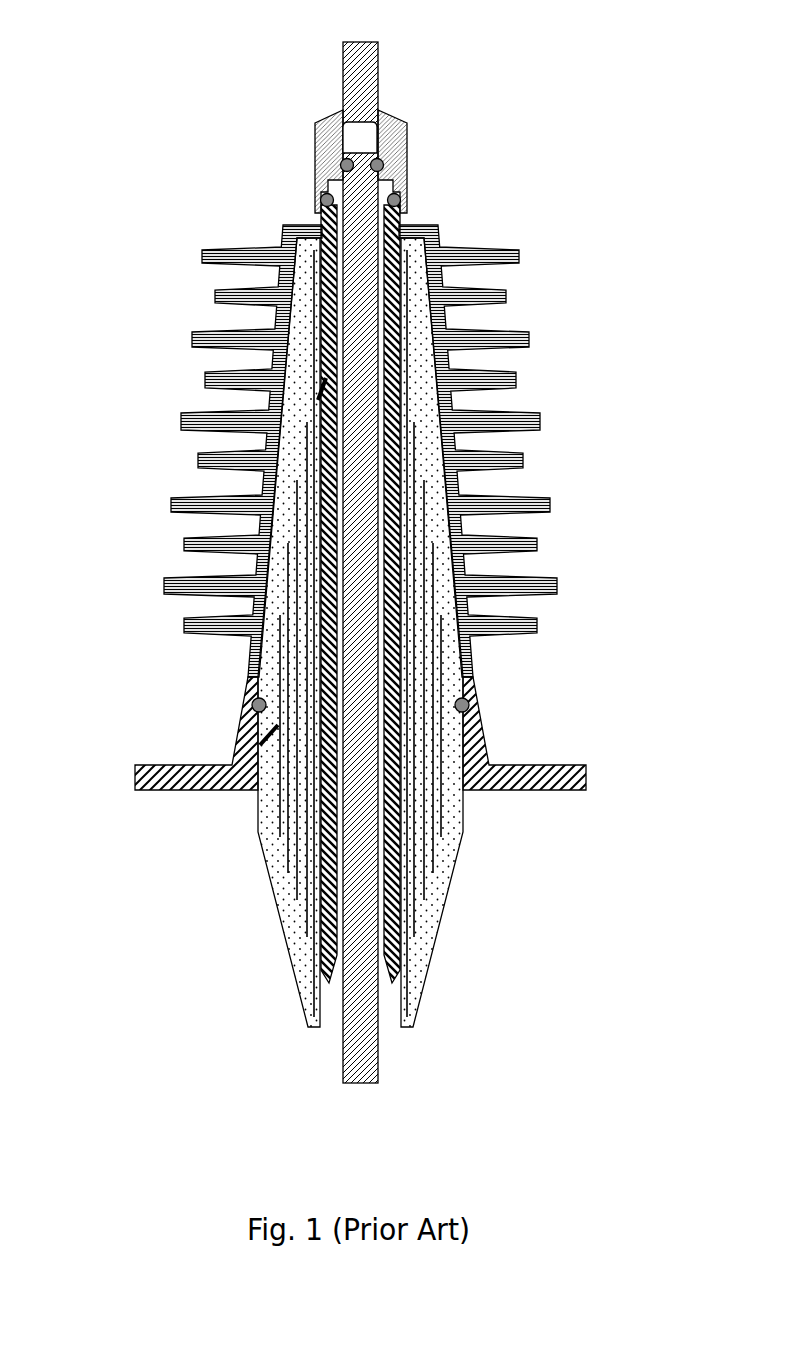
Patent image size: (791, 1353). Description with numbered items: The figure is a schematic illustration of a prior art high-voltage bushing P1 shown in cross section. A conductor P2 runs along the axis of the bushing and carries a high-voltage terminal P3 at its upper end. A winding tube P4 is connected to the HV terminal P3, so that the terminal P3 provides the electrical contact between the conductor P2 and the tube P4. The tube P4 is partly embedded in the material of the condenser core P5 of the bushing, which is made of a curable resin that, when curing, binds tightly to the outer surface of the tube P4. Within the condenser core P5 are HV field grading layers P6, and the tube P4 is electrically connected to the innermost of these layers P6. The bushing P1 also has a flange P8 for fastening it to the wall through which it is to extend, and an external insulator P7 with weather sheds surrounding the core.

The bushing P1 is at (503, 78).
The conductor P2 is at (505, 562).
The HV terminal P3 is at (438, 148).
The winding tube P4 is at (494, 594).
The condenser core P5 is at (446, 632).
The HV field grading layers P6 is at (456, 633).
The external insulator P7 is at (298, 451).
The flange P8 is at (407, 733).